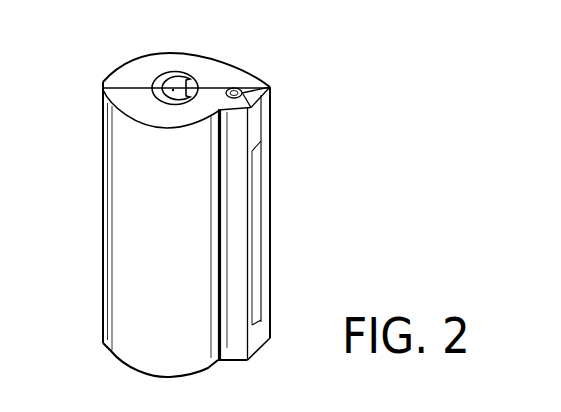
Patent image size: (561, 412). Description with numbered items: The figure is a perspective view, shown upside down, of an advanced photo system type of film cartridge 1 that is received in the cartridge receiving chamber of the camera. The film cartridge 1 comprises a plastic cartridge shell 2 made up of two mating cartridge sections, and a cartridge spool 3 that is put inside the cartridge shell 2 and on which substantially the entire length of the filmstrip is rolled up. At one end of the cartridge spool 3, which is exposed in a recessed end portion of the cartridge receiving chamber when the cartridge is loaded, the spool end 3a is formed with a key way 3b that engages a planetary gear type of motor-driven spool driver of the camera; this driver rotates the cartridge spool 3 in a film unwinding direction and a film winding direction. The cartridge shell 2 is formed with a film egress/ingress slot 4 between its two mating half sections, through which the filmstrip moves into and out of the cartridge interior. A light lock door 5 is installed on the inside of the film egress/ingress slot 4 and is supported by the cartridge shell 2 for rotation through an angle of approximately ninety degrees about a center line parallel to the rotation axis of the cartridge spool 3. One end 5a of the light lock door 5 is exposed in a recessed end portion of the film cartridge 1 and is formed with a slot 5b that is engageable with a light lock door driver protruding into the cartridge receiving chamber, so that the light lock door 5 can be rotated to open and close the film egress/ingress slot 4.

The film cartridge 1 is at (274, 64).
The cartridge shell 2 is at (117, 218).
The cartridge spool 3 is at (147, 67).
The ring of keyway opening 3a is at (178, 76).
The key way 3b is at (173, 91).
The film egress/ingress slot 4 is at (260, 150).
The light lock door 5 is at (253, 217).
The end of light lock door 5a is at (238, 99).
The slot 5b is at (272, 88).